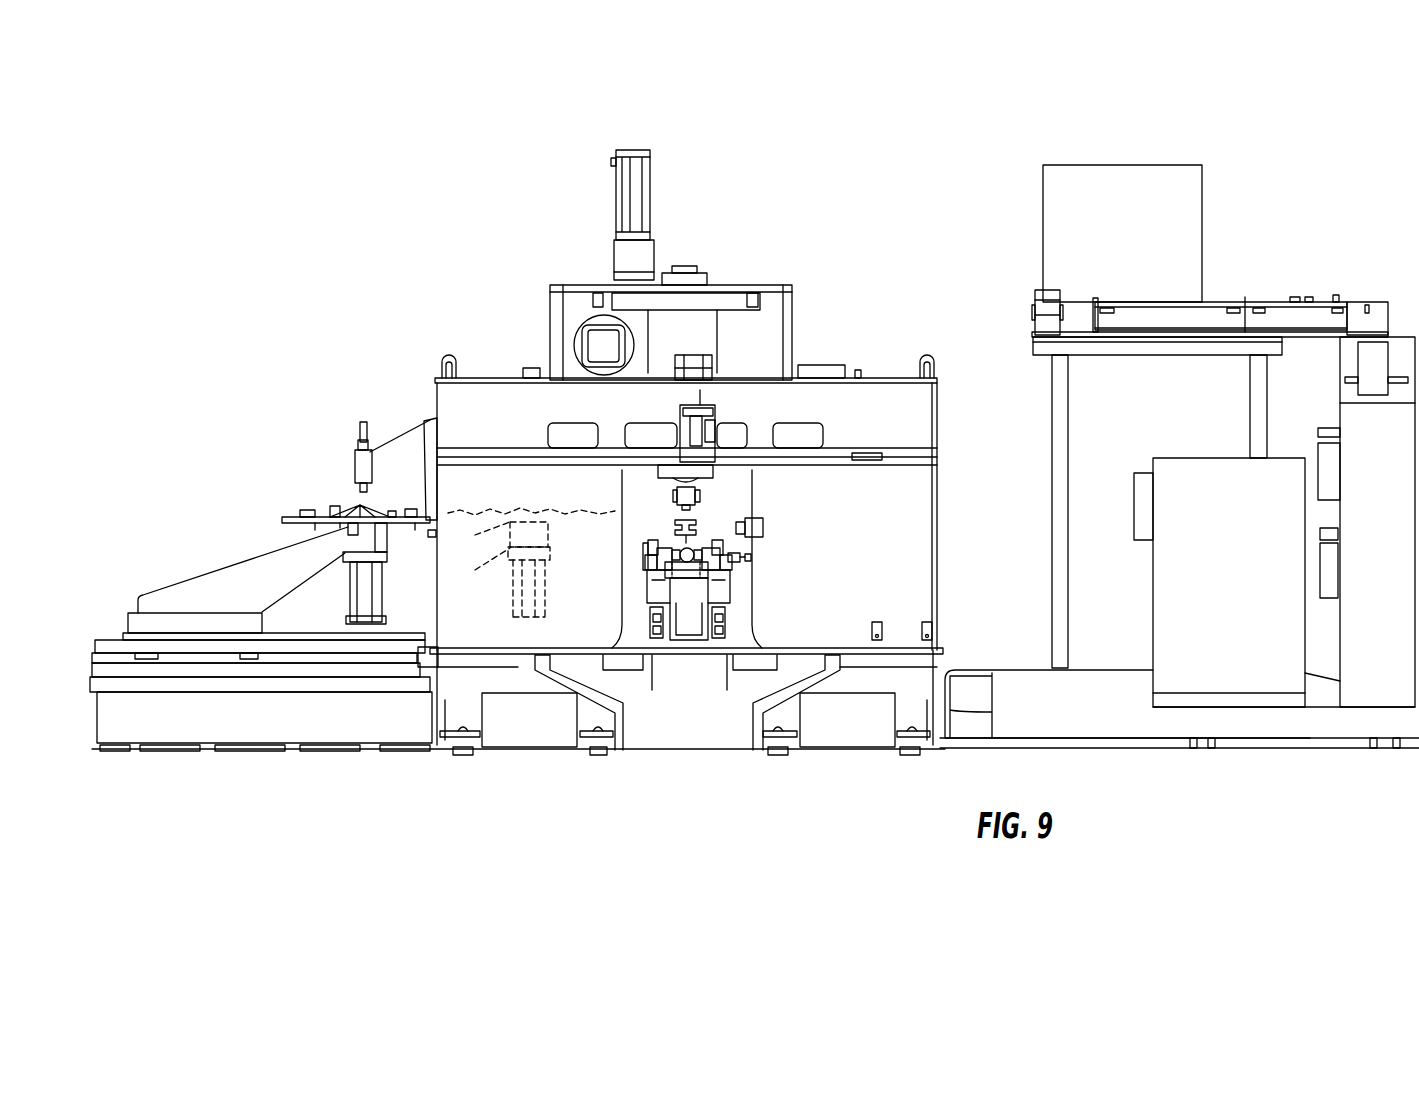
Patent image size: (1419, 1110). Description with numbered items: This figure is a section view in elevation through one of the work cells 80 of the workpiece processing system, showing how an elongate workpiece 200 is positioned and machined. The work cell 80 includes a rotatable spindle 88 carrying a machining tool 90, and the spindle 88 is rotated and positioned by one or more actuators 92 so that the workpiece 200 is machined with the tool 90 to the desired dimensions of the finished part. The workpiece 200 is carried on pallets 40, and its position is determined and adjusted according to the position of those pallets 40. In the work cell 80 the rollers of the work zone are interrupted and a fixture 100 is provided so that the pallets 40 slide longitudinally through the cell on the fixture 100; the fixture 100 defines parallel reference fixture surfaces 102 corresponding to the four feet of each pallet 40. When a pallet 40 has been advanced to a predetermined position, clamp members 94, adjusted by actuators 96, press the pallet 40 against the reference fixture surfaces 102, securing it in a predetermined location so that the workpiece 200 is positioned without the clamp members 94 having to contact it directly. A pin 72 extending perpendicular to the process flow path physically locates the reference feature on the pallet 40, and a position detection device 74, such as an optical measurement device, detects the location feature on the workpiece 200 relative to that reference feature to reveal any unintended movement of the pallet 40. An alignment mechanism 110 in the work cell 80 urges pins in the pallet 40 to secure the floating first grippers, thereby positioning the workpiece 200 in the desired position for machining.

The work cell 80 is at (672, 460).
The rotatable spindle 88 is at (357, 507).
The machining tool 90 is at (433, 462).
The actuator 92 is at (378, 603).
The clamp member 94 is at (650, 550).
The workpiece 200 is at (697, 543).
The pallet 40 is at (697, 520).
The position detection device 74 is at (760, 538).
The alignment mechanism 110 is at (750, 558).
The reference fixture surface 102 is at (723, 572).
The pin 72 is at (663, 553).
The actuator 96 is at (710, 630).
The fixture 100 is at (688, 583).